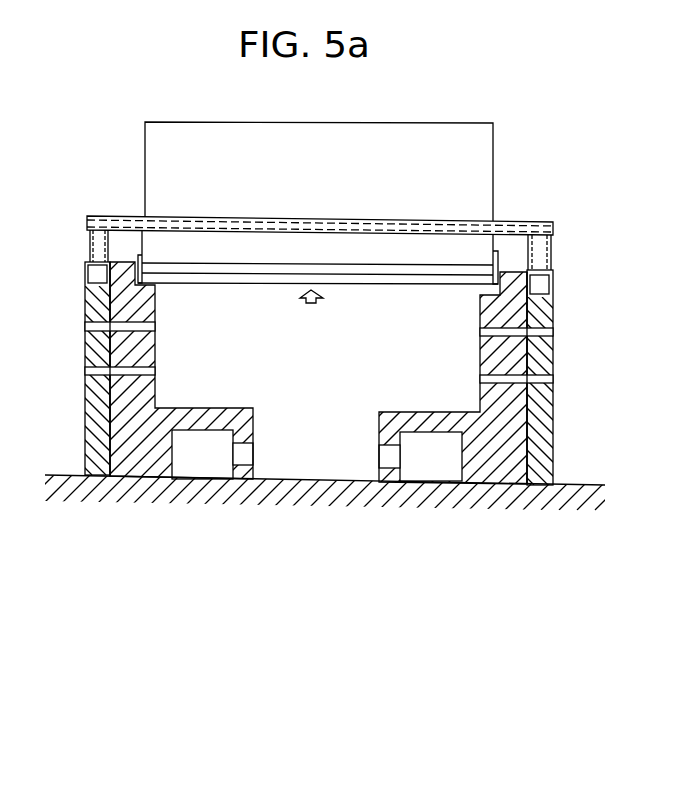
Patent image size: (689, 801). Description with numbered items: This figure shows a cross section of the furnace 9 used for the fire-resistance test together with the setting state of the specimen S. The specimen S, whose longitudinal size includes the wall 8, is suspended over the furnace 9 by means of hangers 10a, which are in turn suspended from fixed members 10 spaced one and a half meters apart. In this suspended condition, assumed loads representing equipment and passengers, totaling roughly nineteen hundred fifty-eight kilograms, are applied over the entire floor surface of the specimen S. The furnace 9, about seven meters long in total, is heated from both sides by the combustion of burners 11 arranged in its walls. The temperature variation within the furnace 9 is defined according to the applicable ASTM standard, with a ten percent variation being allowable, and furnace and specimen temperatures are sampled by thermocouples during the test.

The wall 8 is at (157, 170).
The furnace 9 is at (344, 373).
The fixed members 10 is at (89, 240).
The hangers 10a is at (145, 240).
The burners 11 is at (155, 328).
The specimen S is at (311, 310).